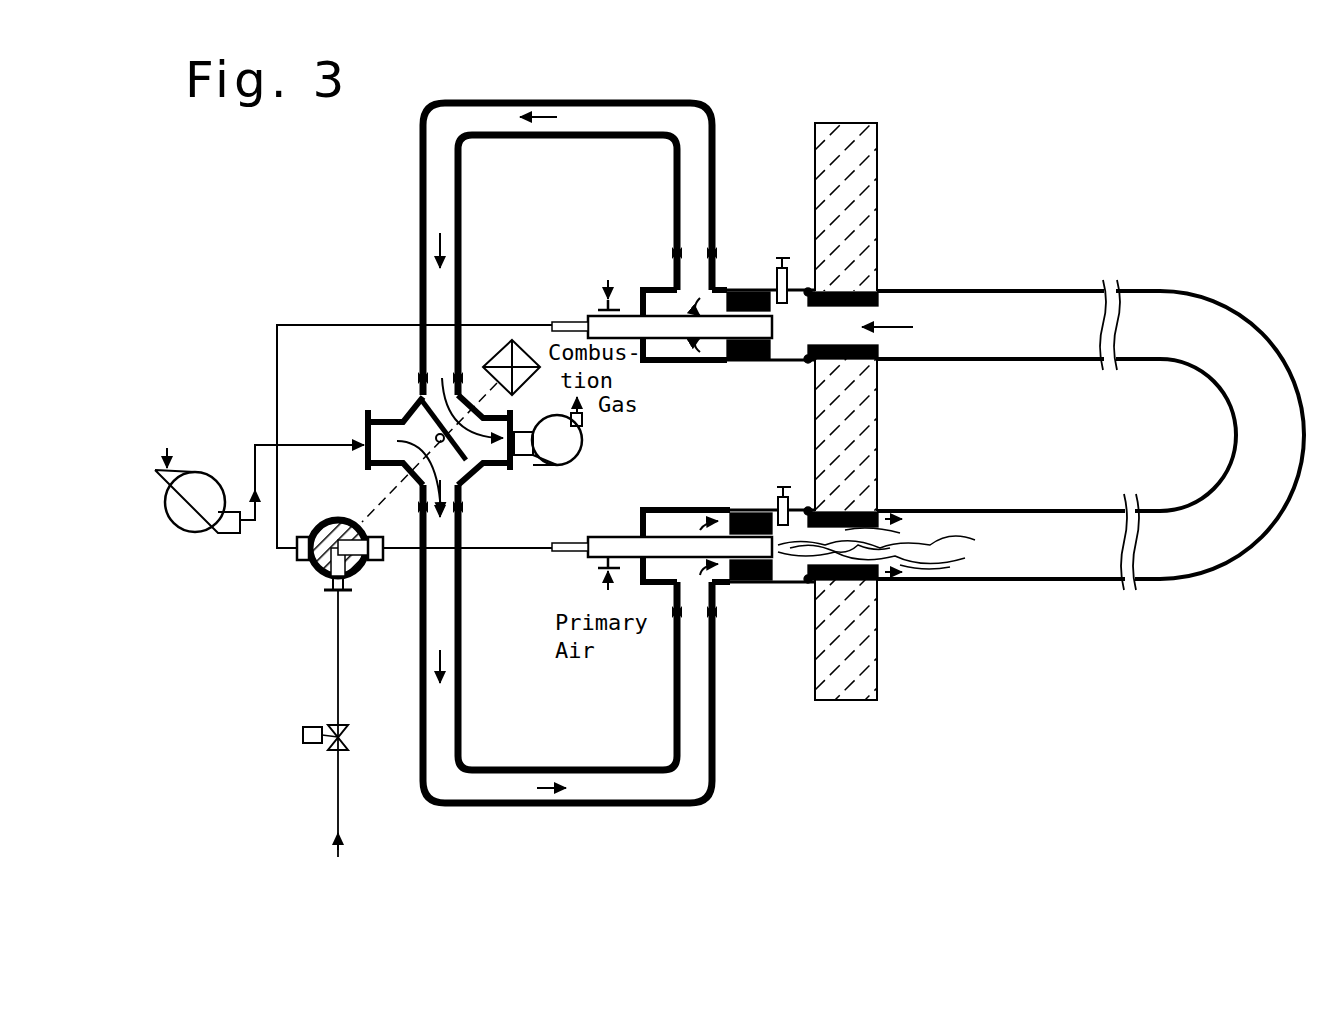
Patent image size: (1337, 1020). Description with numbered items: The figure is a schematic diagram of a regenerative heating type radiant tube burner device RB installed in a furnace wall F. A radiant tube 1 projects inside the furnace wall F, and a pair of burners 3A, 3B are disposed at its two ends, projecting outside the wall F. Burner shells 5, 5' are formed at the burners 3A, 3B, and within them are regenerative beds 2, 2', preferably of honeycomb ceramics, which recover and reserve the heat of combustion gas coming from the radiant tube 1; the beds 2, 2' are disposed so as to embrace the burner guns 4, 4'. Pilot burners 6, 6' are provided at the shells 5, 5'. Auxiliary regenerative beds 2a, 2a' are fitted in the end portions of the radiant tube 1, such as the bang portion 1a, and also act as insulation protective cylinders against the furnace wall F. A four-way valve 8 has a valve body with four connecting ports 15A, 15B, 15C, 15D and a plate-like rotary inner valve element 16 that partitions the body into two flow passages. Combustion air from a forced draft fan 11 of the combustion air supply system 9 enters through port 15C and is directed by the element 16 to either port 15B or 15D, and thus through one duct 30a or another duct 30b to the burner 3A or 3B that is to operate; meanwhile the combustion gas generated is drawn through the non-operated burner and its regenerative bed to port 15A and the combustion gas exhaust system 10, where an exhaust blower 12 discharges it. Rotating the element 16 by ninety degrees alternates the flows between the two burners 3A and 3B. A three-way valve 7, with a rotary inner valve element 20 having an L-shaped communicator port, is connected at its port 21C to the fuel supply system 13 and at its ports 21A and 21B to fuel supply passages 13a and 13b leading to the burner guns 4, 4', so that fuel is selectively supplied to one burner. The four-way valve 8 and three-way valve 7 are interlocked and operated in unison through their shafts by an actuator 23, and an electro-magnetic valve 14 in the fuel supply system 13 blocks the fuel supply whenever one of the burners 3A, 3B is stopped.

The radiant tube 1 is at (1205, 312).
The bang portion of radiant tube 1a is at (860, 244).
The regenerative bed 2 is at (748, 296).
The regenerative bed 2' is at (752, 580).
The auxiliary regenerative bed 2a is at (870, 302).
The auxiliary regenerative bed 2a' is at (870, 523).
The burner 3A is at (705, 372).
The burner 3B is at (718, 483).
The burner gun 4 is at (771, 355).
The burner gun 4' is at (771, 523).
The burner shell 5 is at (662, 351).
The burner shell 5' is at (662, 528).
The pilot burner 6 is at (787, 253).
The pilot burner 6' is at (781, 477).
The three-way valve 7 is at (318, 578).
The four-way valve 8 is at (413, 409).
The combustion air supply system 9 is at (305, 445).
The combustion gas exhaust system 10 is at (518, 468).
The forced draft fan 11 is at (197, 488).
The exhaust blower 12 is at (557, 458).
The fuel supply system 13 is at (344, 695).
The fuel supply passage 13a is at (300, 325).
The fuel supply passage 13b is at (515, 549).
The electro-magnetic valve 14 is at (312, 728).
The connecting port 15A is at (514, 428).
The connecting port 15B is at (393, 562).
The connecting port 15C is at (384, 478).
The connecting port 15D is at (412, 392).
The rotary inner valve element 16 is at (484, 460).
The rotary inner valve element 20 is at (312, 570).
The connecting port 21A is at (382, 562).
The connecting port 21B is at (303, 537).
The connecting port 21C is at (337, 592).
The actuator 23 is at (497, 342).
The duct 30a is at (450, 102).
The duct 30b is at (500, 806).
The furnace wall F is at (880, 152).
The regenerative heating type radiant tube burner device RB is at (1080, 252).